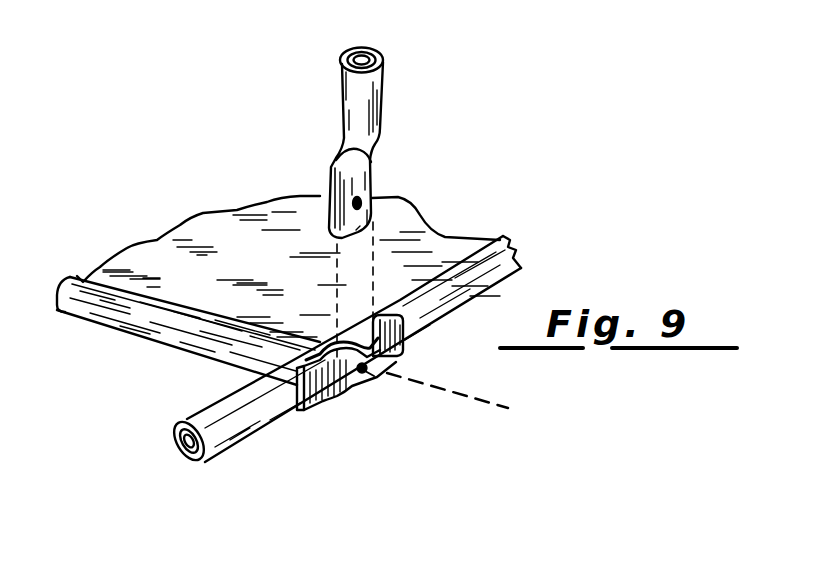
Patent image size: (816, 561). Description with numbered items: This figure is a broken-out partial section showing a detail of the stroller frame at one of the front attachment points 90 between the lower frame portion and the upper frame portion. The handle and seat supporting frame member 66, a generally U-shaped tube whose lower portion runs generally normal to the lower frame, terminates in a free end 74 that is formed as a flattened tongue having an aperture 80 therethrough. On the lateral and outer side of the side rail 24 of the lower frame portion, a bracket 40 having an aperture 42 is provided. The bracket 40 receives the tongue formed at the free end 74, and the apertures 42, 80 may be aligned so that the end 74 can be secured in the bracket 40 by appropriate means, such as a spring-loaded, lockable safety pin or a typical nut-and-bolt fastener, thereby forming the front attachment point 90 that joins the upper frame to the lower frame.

The side rail 24 is at (238, 418).
The bracket 40 is at (353, 384).
The aperture 42 is at (368, 374).
The handle and seat supporting frame member 66 is at (360, 100).
The free end 74 is at (331, 236).
The aperture 80 is at (361, 198).
The front attachment point 90 is at (329, 418).